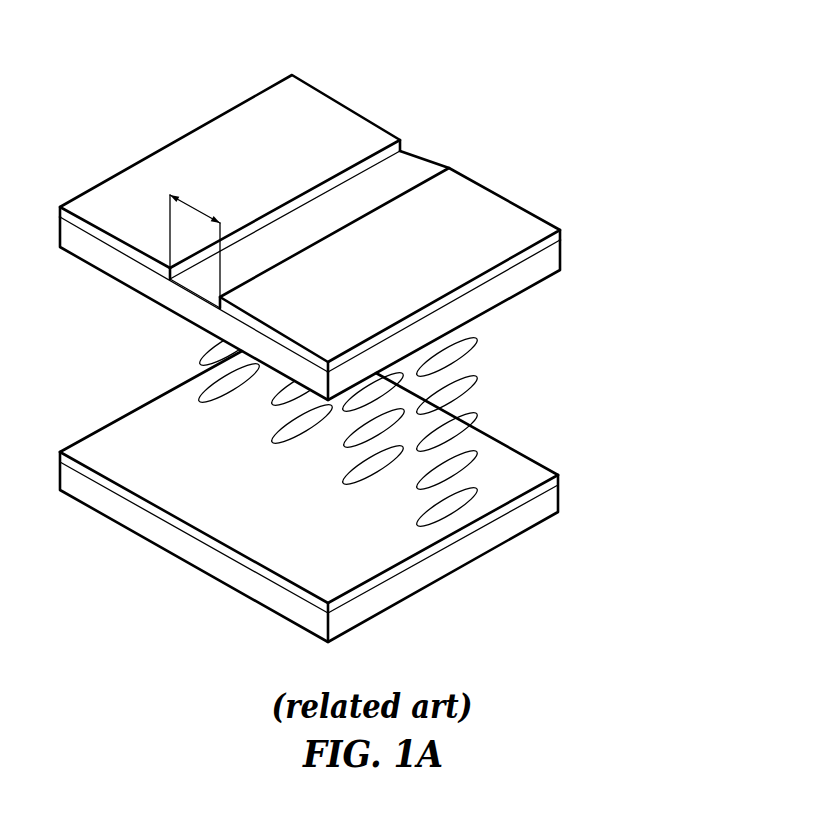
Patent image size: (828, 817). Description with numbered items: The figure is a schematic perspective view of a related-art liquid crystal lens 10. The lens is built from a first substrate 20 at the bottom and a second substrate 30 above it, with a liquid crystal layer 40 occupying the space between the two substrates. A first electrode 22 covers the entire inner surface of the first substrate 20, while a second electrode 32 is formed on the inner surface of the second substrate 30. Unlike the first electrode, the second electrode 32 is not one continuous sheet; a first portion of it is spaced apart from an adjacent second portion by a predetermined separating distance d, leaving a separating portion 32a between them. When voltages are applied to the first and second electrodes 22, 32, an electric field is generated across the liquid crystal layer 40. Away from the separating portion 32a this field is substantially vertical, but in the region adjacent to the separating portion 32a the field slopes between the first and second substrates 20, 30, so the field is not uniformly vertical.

The liquid crystal lens 10 is at (606, 140).
The first substrate 20 is at (550, 520).
The first electrode 22 is at (558, 478).
The second substrate 30 is at (560, 255).
The second electrode 32 is at (370, 130).
The separating portion 32a is at (343, 200).
The liquid crystal layer 40 is at (572, 270).